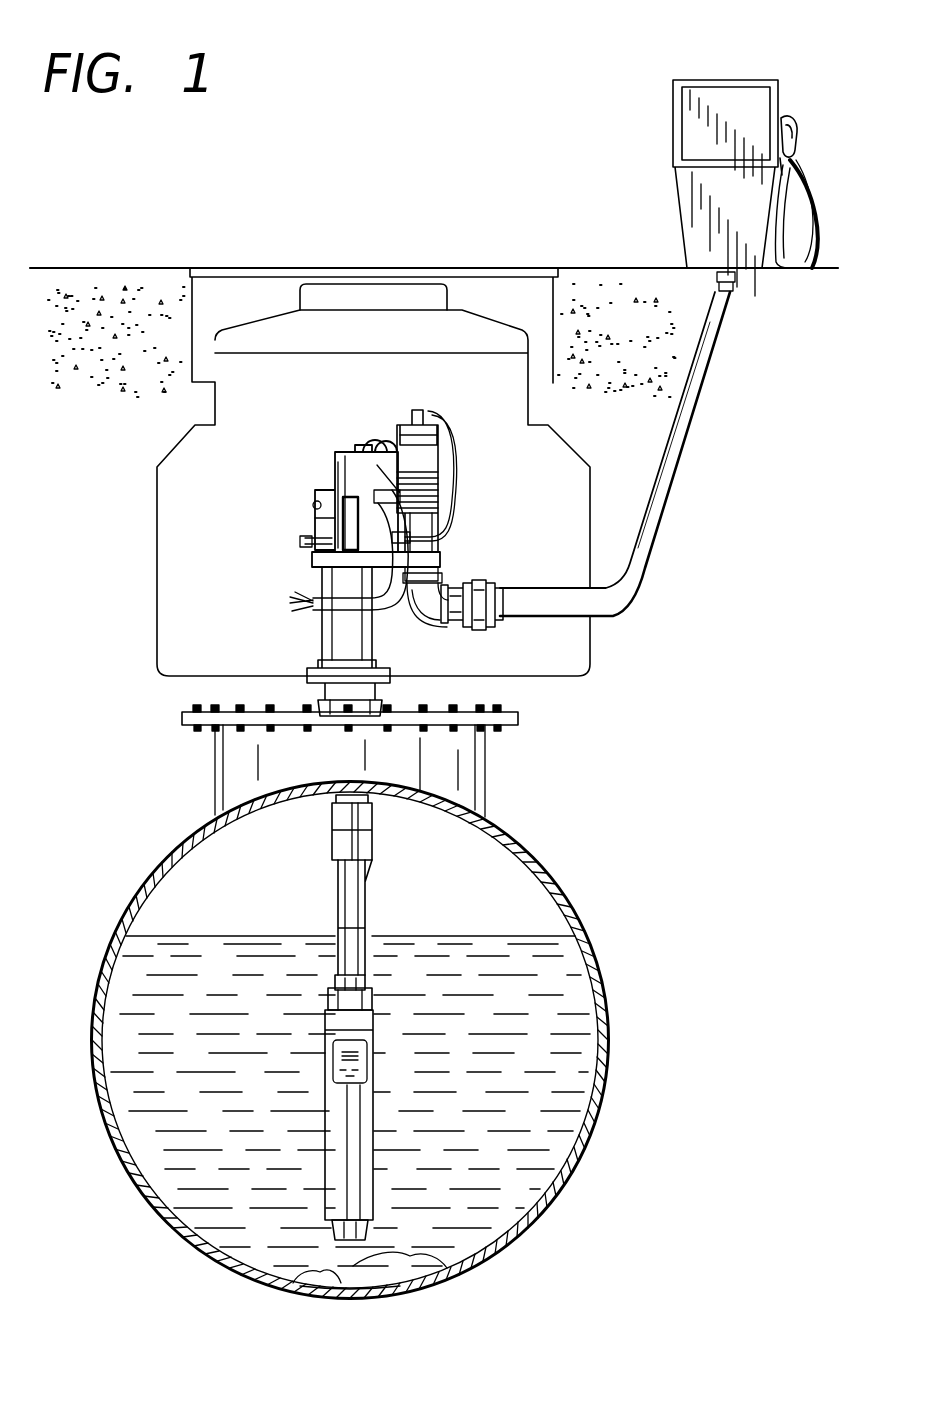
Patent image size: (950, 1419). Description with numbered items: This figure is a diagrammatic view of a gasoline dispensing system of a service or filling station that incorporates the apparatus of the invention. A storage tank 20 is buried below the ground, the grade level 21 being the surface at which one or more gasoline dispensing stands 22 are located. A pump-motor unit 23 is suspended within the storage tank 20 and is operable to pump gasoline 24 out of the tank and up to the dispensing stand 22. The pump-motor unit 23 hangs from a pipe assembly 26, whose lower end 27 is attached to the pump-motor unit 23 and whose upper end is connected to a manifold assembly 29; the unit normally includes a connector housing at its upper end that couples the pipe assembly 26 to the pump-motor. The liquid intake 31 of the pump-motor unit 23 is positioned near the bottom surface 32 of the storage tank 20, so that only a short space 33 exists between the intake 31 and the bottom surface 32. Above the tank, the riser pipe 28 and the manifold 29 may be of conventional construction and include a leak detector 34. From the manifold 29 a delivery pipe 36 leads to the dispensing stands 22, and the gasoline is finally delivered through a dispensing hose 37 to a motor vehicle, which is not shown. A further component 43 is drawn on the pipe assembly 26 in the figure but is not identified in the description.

The storage tank 20 is at (612, 1050).
The grade level 21 is at (106, 266).
The dispensing stand 22 is at (660, 180).
The pump-motor unit 23 is at (382, 1088).
The gasoline 24 is at (541, 934).
The pipe assembly 26 is at (380, 884).
The lower end 27 is at (326, 978).
The riser pipe 28 is at (310, 638).
The manifold assembly 29 is at (294, 487).
The liquid intake 31 is at (375, 1228).
The bottom surface 32 is at (300, 1280).
The short space 33 is at (445, 1278).
The leak detector 34 is at (438, 440).
The delivery pipe 36 is at (517, 588).
The dispensing hose 37 is at (808, 210).
The pipe coupling 43 is at (331, 844).